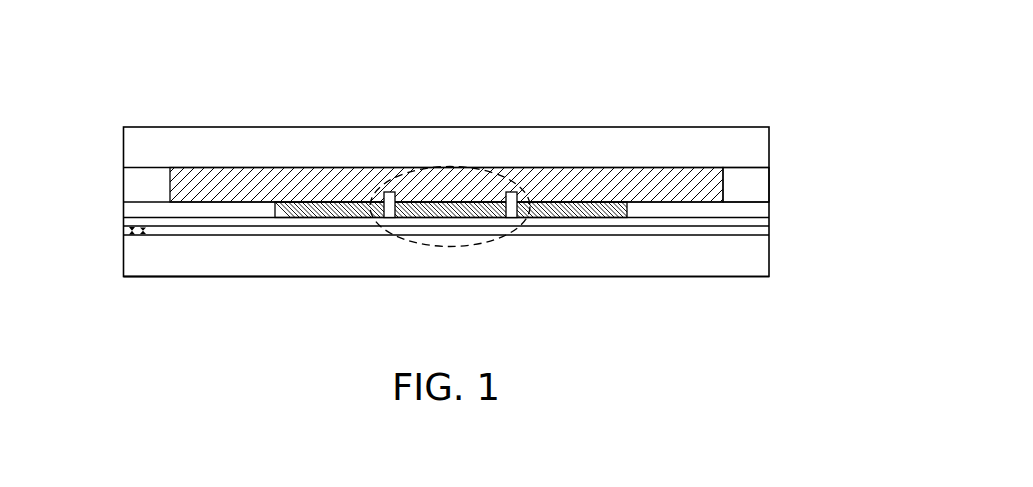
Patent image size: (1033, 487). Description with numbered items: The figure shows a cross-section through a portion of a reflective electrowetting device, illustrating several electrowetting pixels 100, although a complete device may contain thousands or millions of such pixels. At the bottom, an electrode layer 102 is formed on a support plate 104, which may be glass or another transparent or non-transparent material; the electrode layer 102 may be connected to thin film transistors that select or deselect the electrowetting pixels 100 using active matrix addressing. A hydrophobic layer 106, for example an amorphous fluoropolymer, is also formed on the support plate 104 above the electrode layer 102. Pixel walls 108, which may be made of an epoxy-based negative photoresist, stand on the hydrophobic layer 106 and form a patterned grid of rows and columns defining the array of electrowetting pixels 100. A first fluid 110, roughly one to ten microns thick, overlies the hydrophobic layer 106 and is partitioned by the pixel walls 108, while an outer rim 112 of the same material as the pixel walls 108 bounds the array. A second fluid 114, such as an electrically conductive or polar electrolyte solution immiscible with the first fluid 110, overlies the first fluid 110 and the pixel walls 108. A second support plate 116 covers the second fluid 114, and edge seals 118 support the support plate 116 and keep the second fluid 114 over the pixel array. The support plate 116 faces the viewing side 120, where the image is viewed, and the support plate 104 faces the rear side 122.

The electrowetting pixel 100 is at (465, 246).
The electrode layer 102 is at (123, 231).
The support plate 104 is at (447, 262).
The hydrophobic layer 106 is at (123, 222).
The pixel walls 108 is at (390, 219).
The first fluid 110 is at (557, 218).
The outer rim 112 is at (123, 210).
The second fluid 114 is at (637, 167).
The support plate 116 is at (447, 152).
The edge seals 118 is at (770, 183).
The viewing side 120 is at (543, 49).
The rear side 122 is at (287, 340).